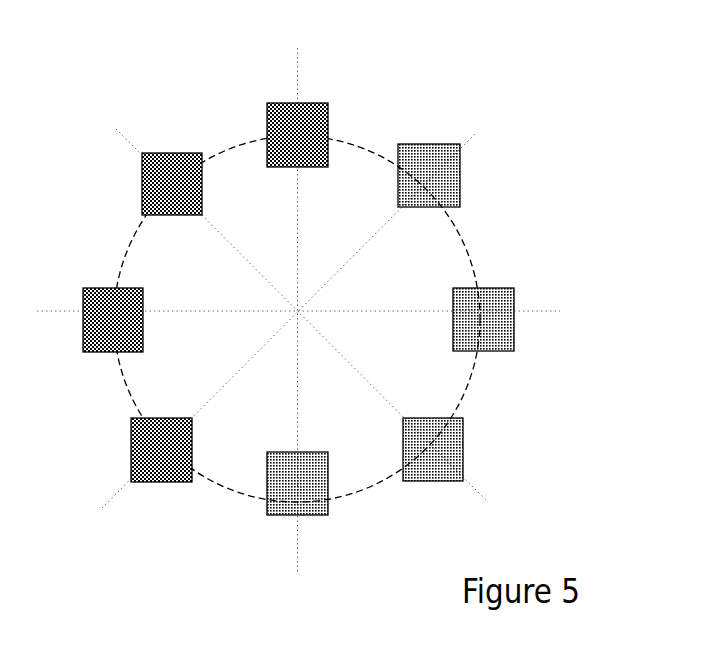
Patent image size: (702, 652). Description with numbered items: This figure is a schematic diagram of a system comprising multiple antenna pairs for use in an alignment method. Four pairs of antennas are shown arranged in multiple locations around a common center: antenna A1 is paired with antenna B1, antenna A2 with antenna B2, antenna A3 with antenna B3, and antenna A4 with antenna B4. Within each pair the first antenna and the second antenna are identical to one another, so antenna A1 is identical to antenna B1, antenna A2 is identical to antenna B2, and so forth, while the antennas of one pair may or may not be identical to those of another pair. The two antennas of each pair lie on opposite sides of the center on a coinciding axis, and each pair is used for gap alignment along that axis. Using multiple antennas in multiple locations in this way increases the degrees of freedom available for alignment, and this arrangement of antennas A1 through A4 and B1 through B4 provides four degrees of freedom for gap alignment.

The antenna A1 is at (289, 100).
The antenna A2 is at (139, 169).
The antenna A3 is at (80, 332).
The antenna A4 is at (155, 483).
The antenna B1 is at (310, 525).
The antenna B2 is at (463, 459).
The antenna B3 is at (516, 306).
The antenna B4 is at (439, 144).